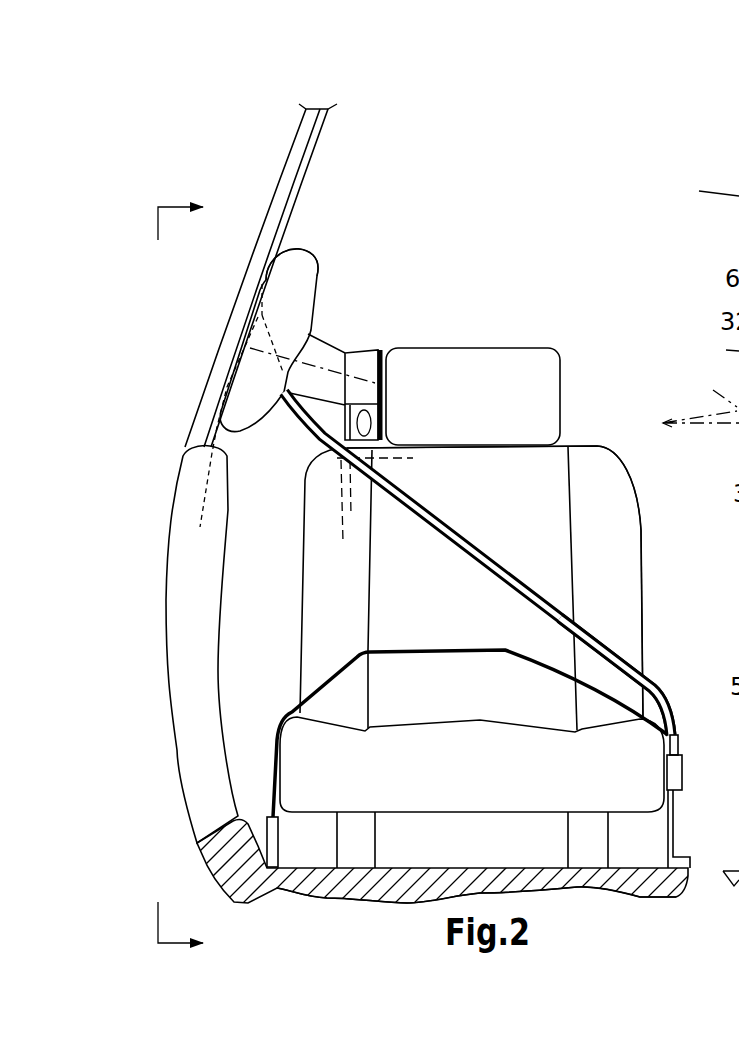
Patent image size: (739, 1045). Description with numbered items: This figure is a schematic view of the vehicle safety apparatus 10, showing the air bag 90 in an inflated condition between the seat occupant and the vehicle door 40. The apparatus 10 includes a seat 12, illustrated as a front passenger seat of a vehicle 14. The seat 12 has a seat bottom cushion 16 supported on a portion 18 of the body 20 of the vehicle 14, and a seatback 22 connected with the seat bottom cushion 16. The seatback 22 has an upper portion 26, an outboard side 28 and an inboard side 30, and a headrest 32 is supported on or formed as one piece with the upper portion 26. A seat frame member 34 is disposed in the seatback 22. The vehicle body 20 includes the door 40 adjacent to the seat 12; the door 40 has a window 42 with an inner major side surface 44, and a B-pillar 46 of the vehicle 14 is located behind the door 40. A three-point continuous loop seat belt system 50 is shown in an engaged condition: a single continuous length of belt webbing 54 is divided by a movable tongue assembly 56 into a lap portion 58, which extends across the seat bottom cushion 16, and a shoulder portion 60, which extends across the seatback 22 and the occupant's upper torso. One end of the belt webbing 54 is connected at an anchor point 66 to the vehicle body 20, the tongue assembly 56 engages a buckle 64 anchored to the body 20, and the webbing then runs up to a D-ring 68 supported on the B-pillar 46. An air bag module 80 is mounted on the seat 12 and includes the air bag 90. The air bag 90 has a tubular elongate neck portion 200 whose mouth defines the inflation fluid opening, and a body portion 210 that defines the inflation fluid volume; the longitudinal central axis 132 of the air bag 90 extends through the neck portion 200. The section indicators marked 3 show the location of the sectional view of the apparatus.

The section line for FIG. 3 is at (192, 574).
The vehicle safety apparatus 10 is at (545, 265).
The seat 12 is at (587, 436).
The vehicle 14 is at (645, 902).
The seat bottom cushion 16 is at (425, 757).
The portion of the body 18 is at (577, 888).
The body 20 is at (530, 866).
The seatback 22 is at (644, 524).
The upper portion 26 is at (560, 450).
The outboard side 28 is at (303, 537).
The inboard side 30 is at (644, 578).
The headrest 32 is at (557, 346).
The seat frame member 34 is at (371, 516).
The door 40 is at (277, 183).
The window 42 is at (316, 147).
The inner major side surface 44 is at (303, 172).
The B-pillar 46 is at (703, 189).
The three-point continuous loop seat belt system 50 is at (585, 596).
The belt webbing 54 is at (604, 646).
The tongue assembly 56 is at (680, 747).
The lap portion 58 is at (598, 693).
The shoulder portion 60 is at (462, 548).
The buckle 64 is at (683, 775).
The anchor point 66 is at (265, 851).
The D-ring 68 is at (257, 300).
The air bag module 80 is at (718, 350).
The air bag 90 is at (318, 264).
The longitudinal central axis 132 is at (221, 388).
The elongate neck portion 200 is at (333, 337).
The body portion 210 is at (300, 249).